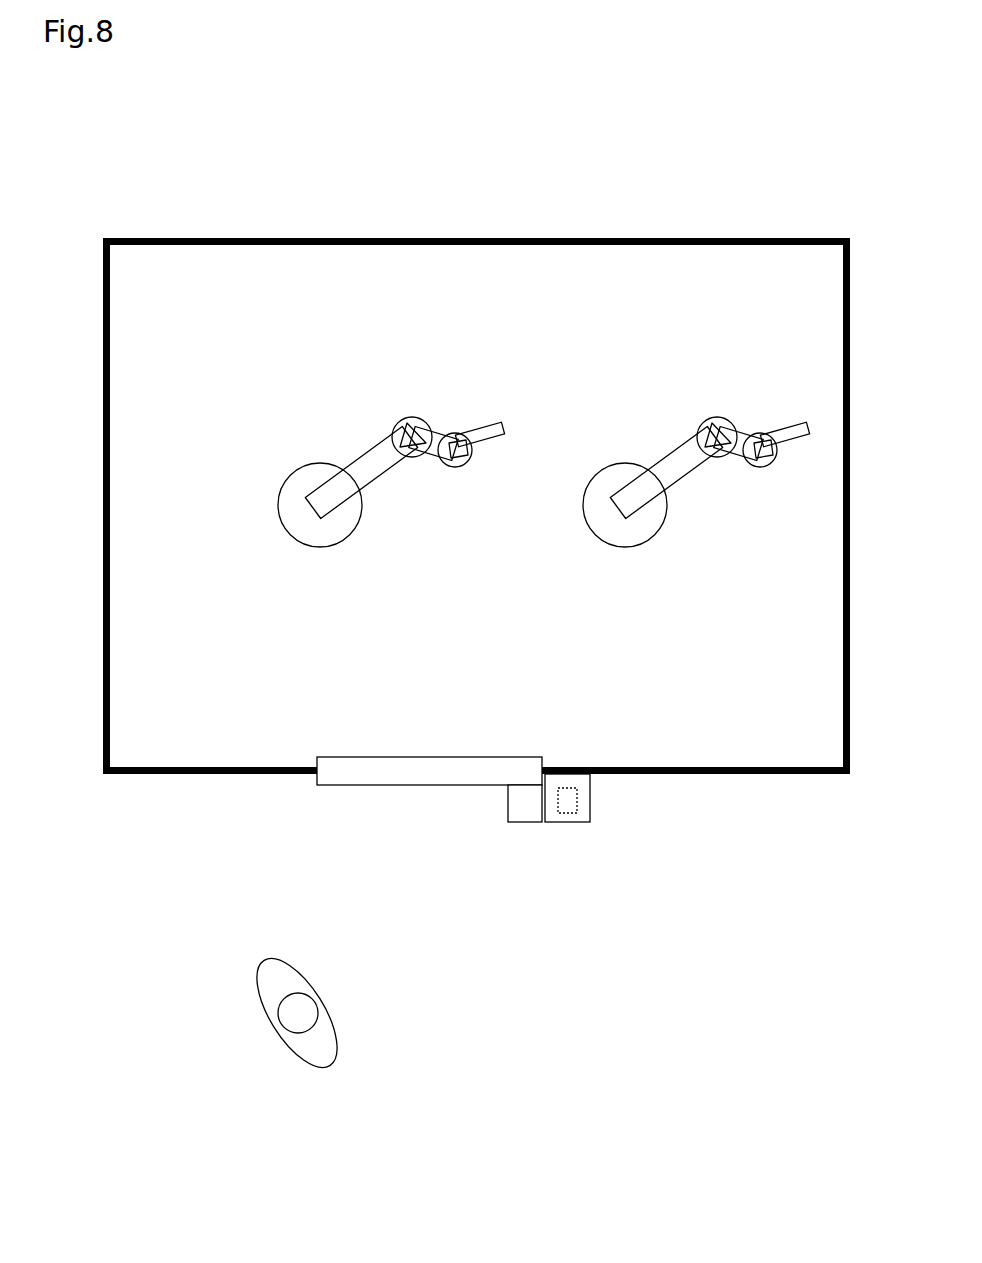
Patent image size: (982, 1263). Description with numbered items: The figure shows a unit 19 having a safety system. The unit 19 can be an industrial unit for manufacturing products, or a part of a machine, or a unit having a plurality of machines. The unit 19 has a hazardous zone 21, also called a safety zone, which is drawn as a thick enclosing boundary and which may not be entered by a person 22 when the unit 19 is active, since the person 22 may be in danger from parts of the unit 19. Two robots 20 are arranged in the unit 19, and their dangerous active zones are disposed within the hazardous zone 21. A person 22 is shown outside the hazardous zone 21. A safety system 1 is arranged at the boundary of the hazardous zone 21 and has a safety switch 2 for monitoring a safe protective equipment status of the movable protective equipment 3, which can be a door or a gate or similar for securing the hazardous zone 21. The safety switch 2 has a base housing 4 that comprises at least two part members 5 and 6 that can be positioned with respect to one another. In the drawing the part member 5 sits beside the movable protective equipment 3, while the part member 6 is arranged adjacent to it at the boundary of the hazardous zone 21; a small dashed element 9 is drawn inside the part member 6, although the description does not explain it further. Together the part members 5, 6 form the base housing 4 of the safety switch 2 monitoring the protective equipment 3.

The unit 19 is at (711, 182).
The hazardous zone 21 is at (121, 326).
The robot 20 is at (375, 457).
The movable protective equipment 3 is at (395, 773).
The part member 5 is at (516, 805).
The part member 6 is at (585, 795).
The sensor element 9 is at (569, 800).
The base housing 4 is at (525, 857).
The safety switch 2 is at (549, 842).
The safety system 1 is at (587, 862).
The person 22 is at (275, 978).